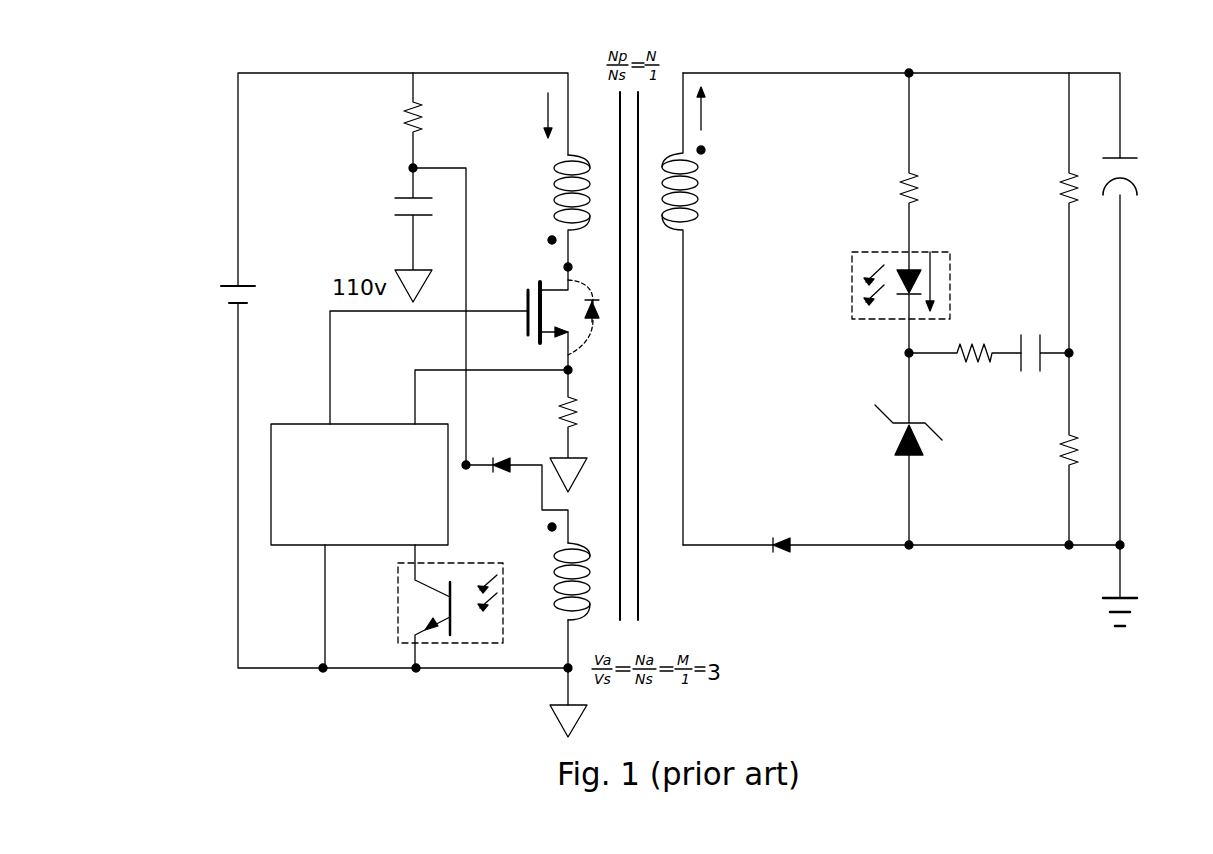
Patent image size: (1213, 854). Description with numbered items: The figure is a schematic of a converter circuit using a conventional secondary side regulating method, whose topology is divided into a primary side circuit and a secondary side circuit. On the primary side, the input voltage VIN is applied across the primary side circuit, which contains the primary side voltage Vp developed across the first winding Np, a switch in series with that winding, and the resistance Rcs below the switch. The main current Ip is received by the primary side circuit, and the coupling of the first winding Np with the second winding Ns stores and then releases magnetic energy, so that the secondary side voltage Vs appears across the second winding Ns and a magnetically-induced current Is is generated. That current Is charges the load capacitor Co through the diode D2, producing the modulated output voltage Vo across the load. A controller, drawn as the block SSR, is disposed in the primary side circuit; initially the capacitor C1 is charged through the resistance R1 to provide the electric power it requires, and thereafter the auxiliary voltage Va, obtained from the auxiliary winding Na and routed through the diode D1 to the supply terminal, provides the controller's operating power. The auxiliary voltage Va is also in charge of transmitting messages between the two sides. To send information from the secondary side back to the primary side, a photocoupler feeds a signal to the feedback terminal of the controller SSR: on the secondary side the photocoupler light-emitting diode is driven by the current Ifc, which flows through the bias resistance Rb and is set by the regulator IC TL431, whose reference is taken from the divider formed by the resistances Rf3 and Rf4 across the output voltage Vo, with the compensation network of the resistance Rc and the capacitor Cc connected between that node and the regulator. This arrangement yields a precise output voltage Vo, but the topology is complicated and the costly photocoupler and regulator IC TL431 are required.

The input voltage VIN is at (253, 191).
The resistance R1 is at (389, 120).
The capacitor C1 is at (394, 235).
The SSR controller SSR is at (359, 484).
The resistance Rcs is at (542, 431).
The diode D1 is at (517, 485).
The primary side voltage Vp is at (514, 194).
The main current Ip is at (534, 115).
The first winding Np is at (581, 193).
The second winding Ns is at (671, 309).
The magnetically-induced current Is is at (714, 108).
The secondary side voltage Vs is at (733, 190).
The auxiliary winding Na is at (564, 567).
The auxiliary voltage Va is at (466, 603).
The diode D2 is at (778, 564).
The bias resistor Rb is at (880, 171).
The optocoupler LED current Ifc is at (908, 284).
The compensation resistor Rc is at (965, 331).
The compensation capacitor Cc is at (1040, 335).
The regulator IC TL431 is at (877, 449).
The feedback resistor Rf3 is at (1038, 213).
The feedback resistor Rf4 is at (1037, 449).
The load capacitor Co is at (1106, 161).
The output voltage Vo is at (1158, 172).